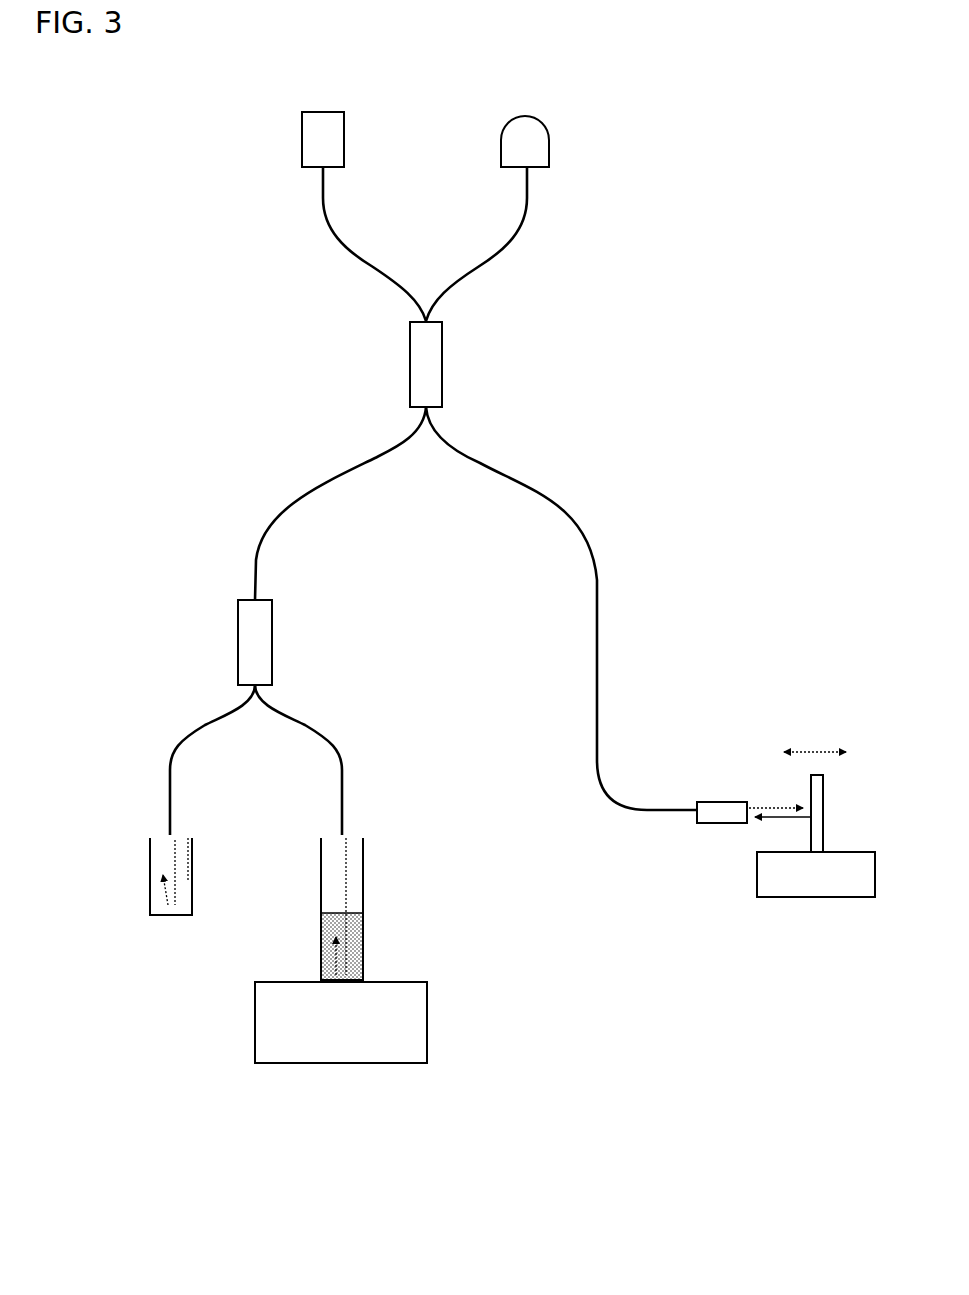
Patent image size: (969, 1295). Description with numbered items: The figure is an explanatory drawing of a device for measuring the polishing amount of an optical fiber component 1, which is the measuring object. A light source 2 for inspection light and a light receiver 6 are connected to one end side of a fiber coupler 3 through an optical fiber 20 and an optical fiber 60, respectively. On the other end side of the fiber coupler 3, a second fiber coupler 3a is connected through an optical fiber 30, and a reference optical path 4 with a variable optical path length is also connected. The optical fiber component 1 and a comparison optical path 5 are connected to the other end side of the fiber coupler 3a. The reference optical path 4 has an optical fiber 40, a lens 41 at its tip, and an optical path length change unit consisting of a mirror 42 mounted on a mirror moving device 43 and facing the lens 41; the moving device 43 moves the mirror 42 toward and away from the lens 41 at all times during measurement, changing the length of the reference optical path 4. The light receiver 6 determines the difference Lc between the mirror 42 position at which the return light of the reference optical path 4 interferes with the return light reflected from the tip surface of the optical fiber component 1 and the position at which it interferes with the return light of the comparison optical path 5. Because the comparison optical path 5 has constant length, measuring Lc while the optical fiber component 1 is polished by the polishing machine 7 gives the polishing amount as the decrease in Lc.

The optical fiber component 1 is at (345, 778).
The light source 2 is at (301, 138).
The fiber coupler 3 is at (443, 362).
The fiber coupler 3a is at (273, 640).
The reference optical path 4 is at (592, 533).
The comparison optical path 5 is at (168, 782).
The light receiver 6 is at (550, 143).
The polishing machine 7 is at (340, 1065).
The optical fiber 20 is at (337, 232).
The optical fiber 30 is at (317, 490).
The optical fiber 40 is at (595, 598).
The lens 41 is at (710, 800).
The mirror 42 is at (825, 790).
The mirror moving device 43 is at (816, 898).
The optical fiber 60 is at (522, 218).